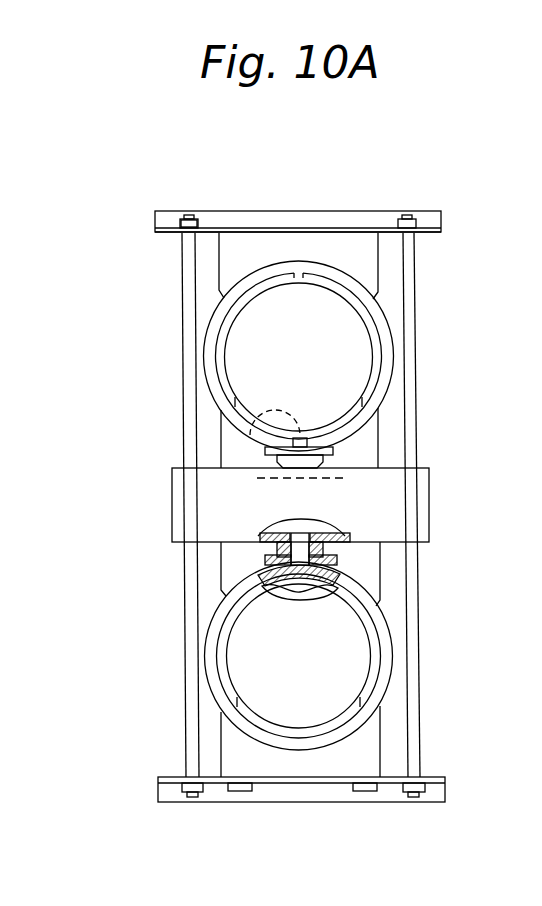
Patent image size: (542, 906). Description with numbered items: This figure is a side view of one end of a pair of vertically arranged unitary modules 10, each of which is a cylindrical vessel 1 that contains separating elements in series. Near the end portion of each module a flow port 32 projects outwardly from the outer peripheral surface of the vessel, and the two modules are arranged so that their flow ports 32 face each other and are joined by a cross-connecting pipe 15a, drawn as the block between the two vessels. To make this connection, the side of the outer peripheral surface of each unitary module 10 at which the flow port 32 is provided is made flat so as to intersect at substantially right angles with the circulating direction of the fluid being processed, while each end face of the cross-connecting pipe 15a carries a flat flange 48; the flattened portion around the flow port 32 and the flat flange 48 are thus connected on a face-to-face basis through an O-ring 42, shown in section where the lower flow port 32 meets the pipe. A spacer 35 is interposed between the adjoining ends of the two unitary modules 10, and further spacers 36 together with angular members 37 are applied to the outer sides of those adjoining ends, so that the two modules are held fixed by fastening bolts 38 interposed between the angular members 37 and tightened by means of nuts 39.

The cylindrical vessel 1 is at (392, 355).
The unitary module 10 is at (388, 318).
The cross-connecting pipe 15a is at (212, 500).
The flow port 32 is at (245, 426).
The spacer 35 is at (374, 443).
The spacer 36 is at (316, 245).
The angular member 37 is at (383, 220).
The fastening bolt 38 is at (195, 733).
The nut 39 is at (191, 222).
The O-ring 42 is at (368, 602).
The flat flange 48 is at (326, 566).